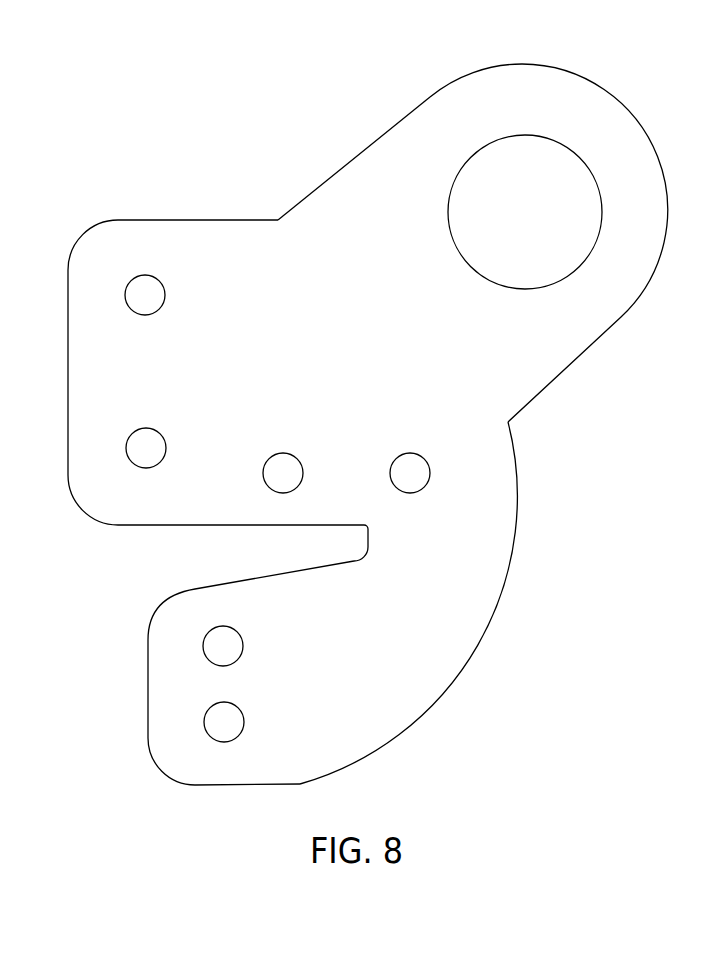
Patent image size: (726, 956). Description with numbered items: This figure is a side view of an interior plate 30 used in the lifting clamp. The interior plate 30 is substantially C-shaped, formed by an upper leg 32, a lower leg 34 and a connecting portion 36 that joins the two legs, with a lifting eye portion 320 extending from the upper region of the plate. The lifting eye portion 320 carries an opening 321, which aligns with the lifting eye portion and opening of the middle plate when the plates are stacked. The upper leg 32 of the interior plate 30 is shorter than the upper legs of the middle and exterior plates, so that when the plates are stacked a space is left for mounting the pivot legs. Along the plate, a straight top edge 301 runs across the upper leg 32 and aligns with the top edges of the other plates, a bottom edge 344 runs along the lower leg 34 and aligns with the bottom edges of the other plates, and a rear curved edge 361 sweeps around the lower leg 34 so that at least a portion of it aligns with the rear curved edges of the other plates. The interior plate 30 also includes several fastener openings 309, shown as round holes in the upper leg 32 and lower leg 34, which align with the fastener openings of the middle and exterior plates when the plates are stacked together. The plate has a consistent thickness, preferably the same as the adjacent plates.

The interior plate 30 is at (309, 139).
The top edge 301 is at (130, 220).
The upper leg 32 is at (224, 268).
The lifting eye portion 320 is at (610, 157).
The opening 321 is at (532, 218).
The fastener openings 309 is at (160, 309).
The connecting portion 36 is at (392, 535).
The rear curved edge 361 is at (487, 632).
The lower leg 34 is at (366, 707).
The bottom edge 344 is at (216, 786).